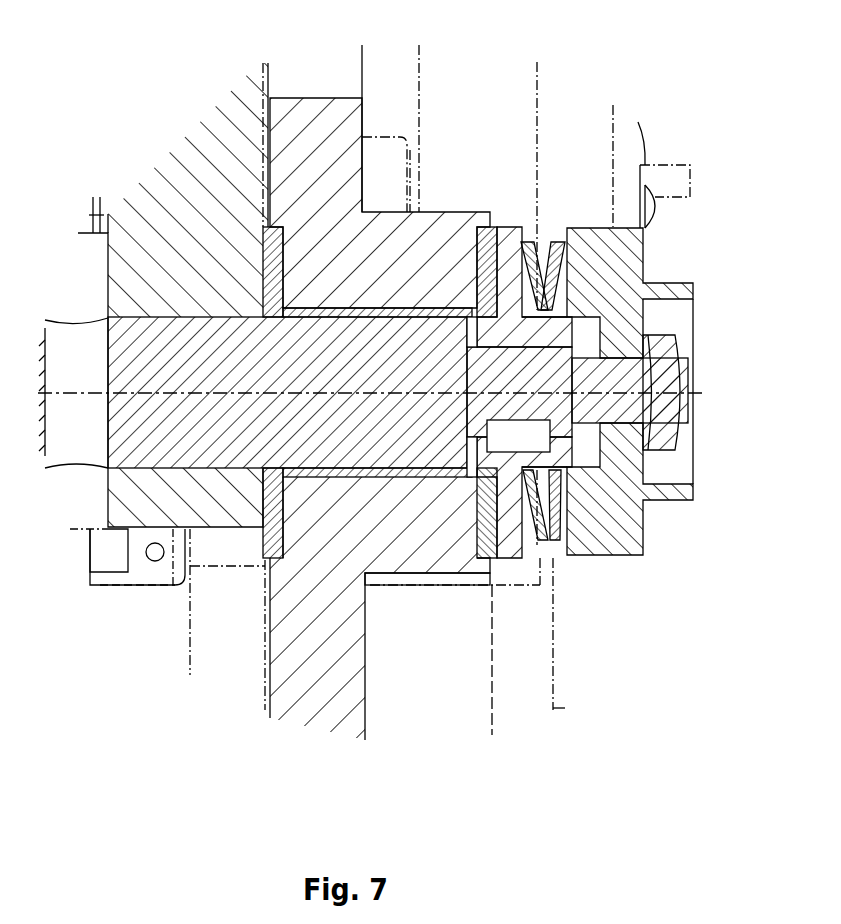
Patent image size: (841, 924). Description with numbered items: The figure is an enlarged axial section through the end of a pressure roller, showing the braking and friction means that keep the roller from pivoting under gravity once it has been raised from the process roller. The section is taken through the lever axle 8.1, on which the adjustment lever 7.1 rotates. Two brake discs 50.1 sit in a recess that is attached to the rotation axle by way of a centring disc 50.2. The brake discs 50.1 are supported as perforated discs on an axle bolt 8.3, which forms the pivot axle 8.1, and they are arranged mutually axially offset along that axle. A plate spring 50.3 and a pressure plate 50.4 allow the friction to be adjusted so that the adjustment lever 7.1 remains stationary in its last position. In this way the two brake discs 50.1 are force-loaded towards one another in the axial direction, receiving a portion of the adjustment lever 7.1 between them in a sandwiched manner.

The adjustment lever 7.1 is at (353, 567).
The lever axle 8.1 is at (696, 398).
The axle bolt 8.3 is at (539, 548).
The brake discs 50.1 is at (486, 240).
The centring disc 50.2 is at (511, 245).
The plate spring 50.3 is at (554, 252).
The pressure plate 50.4 is at (607, 253).